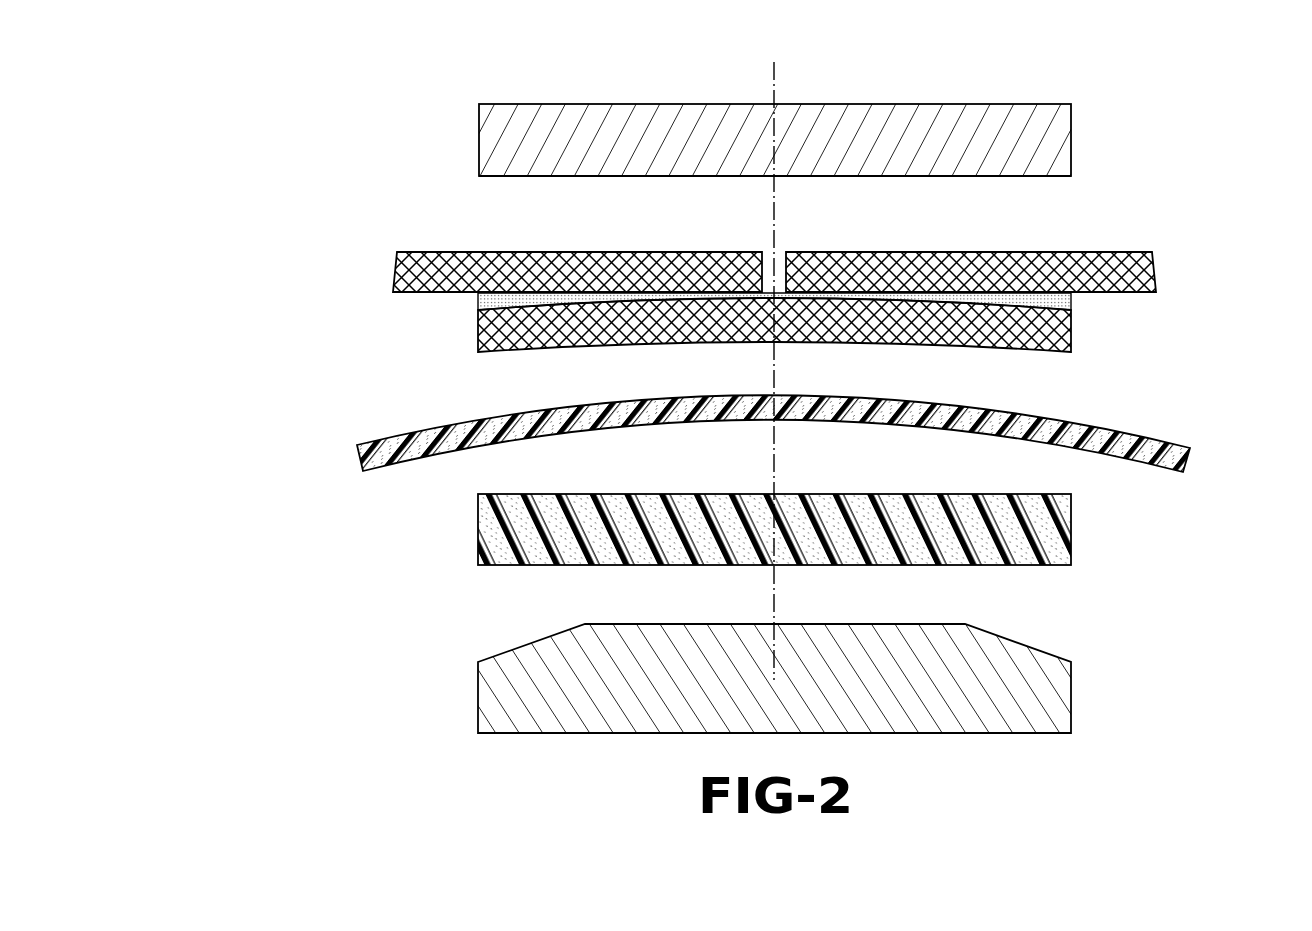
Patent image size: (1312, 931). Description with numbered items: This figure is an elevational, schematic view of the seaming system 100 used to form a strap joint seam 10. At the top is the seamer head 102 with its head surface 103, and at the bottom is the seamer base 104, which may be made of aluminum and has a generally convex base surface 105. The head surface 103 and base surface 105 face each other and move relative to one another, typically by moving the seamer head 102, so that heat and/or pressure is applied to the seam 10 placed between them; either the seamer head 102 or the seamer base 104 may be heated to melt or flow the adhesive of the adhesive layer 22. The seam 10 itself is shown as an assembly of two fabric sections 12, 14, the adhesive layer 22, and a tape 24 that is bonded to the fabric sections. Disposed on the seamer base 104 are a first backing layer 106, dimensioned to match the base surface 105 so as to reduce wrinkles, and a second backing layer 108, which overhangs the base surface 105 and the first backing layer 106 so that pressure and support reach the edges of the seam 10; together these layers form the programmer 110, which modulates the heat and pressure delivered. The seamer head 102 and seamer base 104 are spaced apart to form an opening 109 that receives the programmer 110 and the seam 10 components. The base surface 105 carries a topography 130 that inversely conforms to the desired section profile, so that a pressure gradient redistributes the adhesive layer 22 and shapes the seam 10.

The seaming system 100 is at (248, 168).
The seamer head 102 is at (565, 113).
The head surface 103 is at (870, 176).
The seam 10 is at (364, 247).
The fabric section 14 is at (440, 262).
The fabric section 12 is at (1110, 262).
The adhesive layer 22 is at (480, 300).
The tape 24 is at (503, 338).
The opening 109 is at (1093, 370).
The programmer 110 is at (333, 443).
The second backing layer 108 is at (1143, 443).
The first backing layer 106 is at (1047, 533).
The topography 130 is at (1075, 628).
The seamer base 104 is at (1040, 697).
The base surface 105 is at (602, 624).